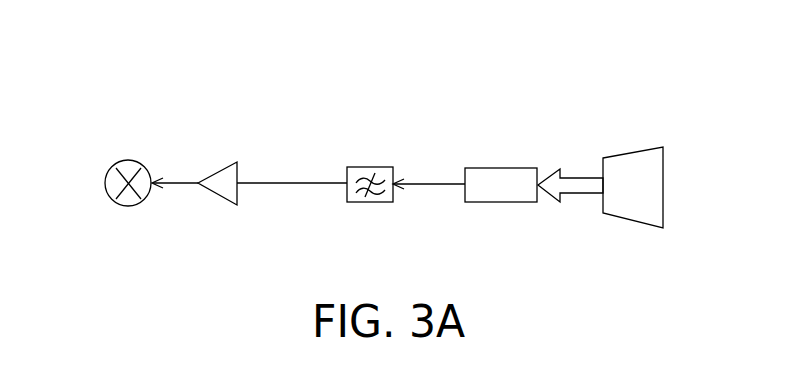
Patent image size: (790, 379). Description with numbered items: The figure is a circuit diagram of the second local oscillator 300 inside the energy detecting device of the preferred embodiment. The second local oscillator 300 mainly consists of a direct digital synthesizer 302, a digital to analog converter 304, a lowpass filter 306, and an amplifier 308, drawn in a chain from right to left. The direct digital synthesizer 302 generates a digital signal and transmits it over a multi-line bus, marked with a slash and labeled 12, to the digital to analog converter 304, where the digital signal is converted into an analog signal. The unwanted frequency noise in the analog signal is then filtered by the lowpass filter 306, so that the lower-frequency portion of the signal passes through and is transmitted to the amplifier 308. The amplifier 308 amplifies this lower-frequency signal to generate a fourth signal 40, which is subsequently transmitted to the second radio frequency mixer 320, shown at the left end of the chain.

The second local oscillator 300 is at (602, 281).
The direct digital synthesizer 302 is at (633, 148).
The digital to analog converter 304 is at (478, 168).
The lowpass filter 306 is at (363, 166).
The amplifier 308 is at (227, 168).
The second radio frequency mixer 320 is at (133, 206).
The fourth signal 40 is at (177, 178).
The digital bus 12 is at (587, 170).